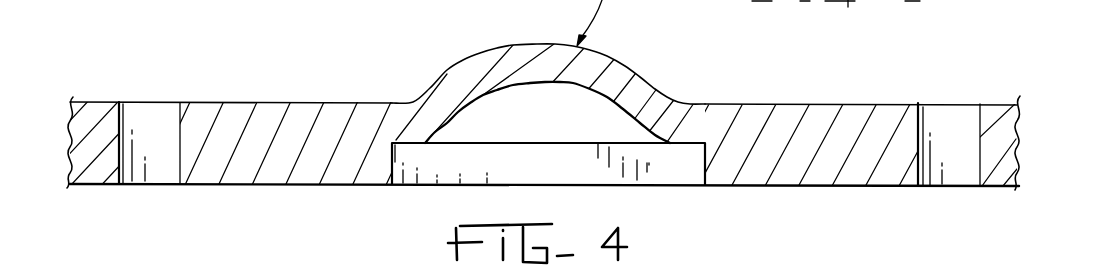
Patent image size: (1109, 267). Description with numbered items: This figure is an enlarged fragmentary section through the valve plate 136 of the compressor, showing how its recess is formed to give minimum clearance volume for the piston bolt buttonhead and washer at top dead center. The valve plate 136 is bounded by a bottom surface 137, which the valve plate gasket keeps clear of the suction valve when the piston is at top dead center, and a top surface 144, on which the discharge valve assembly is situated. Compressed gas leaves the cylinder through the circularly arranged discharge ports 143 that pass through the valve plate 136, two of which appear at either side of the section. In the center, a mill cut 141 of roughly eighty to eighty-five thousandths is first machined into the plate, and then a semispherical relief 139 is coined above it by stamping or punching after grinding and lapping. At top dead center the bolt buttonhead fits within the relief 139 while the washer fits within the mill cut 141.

The valve plate 136 is at (702, 89).
The bottom surface 137 is at (795, 188).
The semispherical relief 139 is at (483, 104).
The mill cut 141 is at (396, 183).
The discharge ports 143 is at (122, 110).
The top surface 144 is at (821, 105).